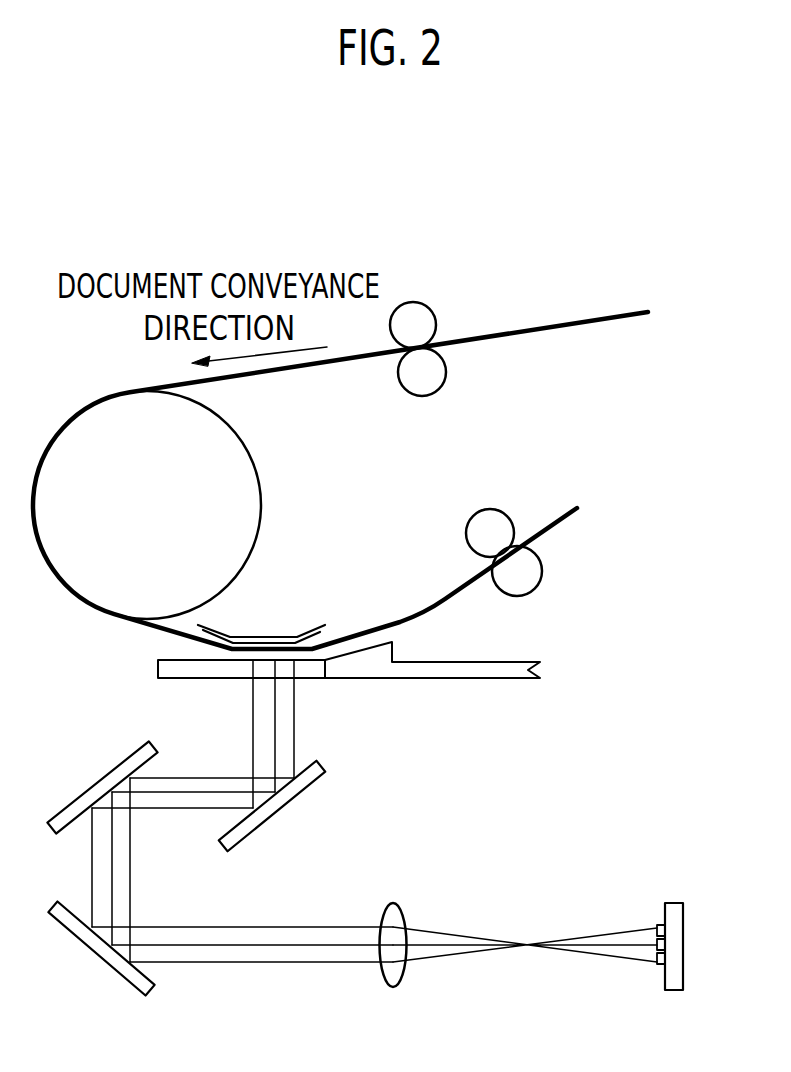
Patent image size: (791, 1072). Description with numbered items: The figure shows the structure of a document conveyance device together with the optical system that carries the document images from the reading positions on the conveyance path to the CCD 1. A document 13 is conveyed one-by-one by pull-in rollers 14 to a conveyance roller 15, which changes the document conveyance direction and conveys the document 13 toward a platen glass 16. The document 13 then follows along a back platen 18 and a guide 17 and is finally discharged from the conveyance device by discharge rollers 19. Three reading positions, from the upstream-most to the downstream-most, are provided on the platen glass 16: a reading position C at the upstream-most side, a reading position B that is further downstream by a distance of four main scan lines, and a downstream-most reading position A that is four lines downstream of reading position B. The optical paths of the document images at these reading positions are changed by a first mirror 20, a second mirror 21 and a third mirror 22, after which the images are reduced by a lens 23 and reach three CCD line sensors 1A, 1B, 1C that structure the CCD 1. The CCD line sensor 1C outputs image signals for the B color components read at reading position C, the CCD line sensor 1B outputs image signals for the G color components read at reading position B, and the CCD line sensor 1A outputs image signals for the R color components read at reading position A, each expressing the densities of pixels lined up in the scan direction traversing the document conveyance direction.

The CCD 1 is at (641, 899).
The CCD line sensor 1A is at (660, 924).
The CCD line sensor 1B is at (656, 940).
The CCD line sensor 1C is at (657, 965).
The document 13 is at (523, 328).
The pull-in rollers 14 is at (423, 327).
The conveyance roller 15 is at (261, 482).
The platen glass 16 is at (322, 672).
The document guide 17 is at (457, 670).
The back platen 18 is at (257, 640).
The discharge rollers 19 is at (487, 513).
The first mirror 20 is at (322, 760).
The second mirror 21 is at (73, 800).
The third mirror 22 is at (55, 903).
The lens 23 is at (393, 905).
The reading position A is at (294, 663).
The reading position B is at (272, 667).
The reading position C is at (250, 665).